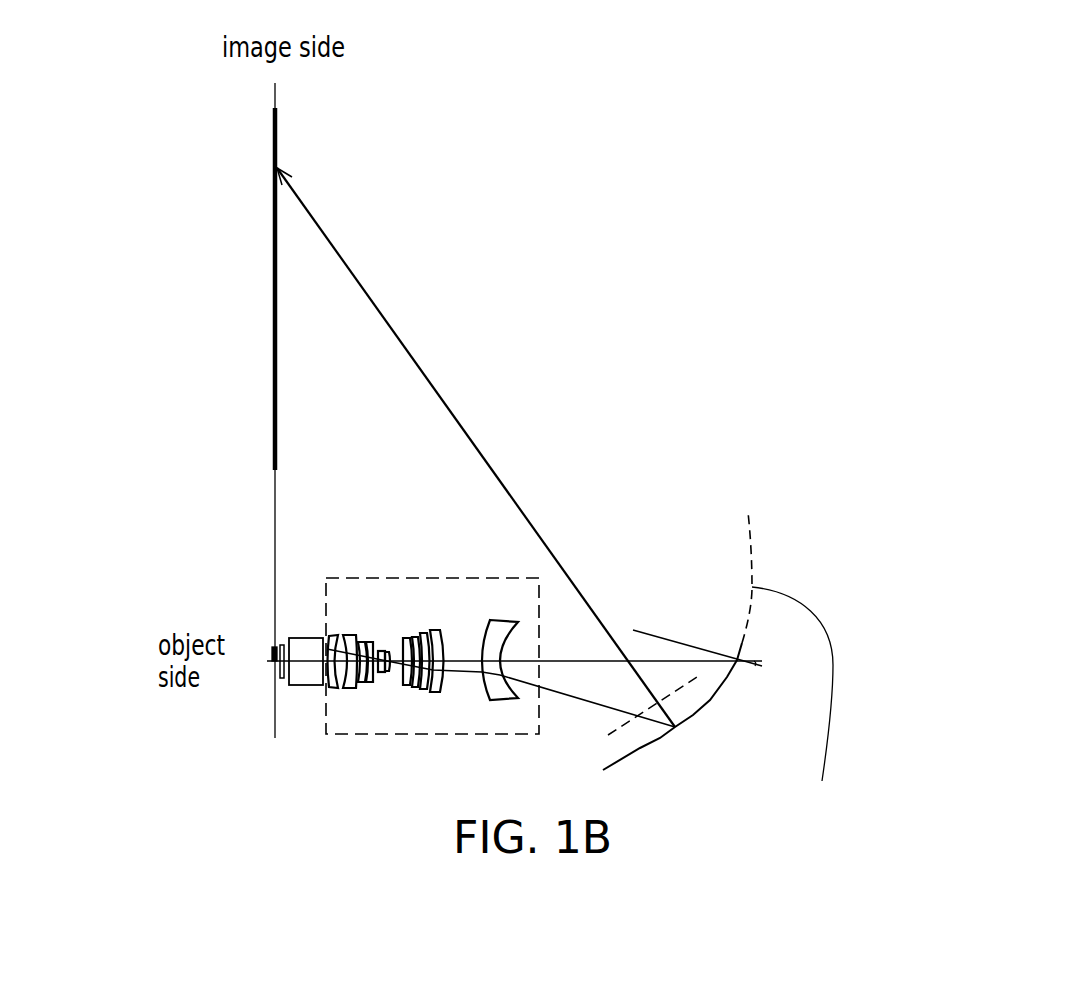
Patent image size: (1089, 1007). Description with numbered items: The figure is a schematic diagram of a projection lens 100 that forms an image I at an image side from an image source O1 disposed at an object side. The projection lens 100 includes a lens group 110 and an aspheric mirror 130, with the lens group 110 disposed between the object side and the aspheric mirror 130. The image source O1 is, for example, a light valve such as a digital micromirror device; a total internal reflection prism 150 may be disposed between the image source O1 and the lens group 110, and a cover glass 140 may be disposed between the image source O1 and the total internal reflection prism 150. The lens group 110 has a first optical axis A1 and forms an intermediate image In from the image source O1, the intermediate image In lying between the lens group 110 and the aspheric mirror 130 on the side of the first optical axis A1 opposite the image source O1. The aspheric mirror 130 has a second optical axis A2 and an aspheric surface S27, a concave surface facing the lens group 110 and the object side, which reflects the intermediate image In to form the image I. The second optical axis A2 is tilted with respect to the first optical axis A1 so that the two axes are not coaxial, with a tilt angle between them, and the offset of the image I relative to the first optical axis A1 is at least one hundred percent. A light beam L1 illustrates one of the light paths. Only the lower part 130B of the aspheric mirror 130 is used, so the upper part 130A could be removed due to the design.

The projection lens 100 is at (1017, 732).
The lens group 110 is at (434, 577).
The aspheric mirror 130 is at (725, 688).
The upper part of the aspheric mirror 130A is at (800, 700).
The lower part of the aspheric mirror 130B is at (705, 711).
The cover glass 140 is at (278, 677).
The total internal reflection prism 150 is at (308, 680).
The image I is at (273, 447).
The light beam L1 is at (467, 432).
The aspheric surface S27 is at (620, 764).
The image source O1 is at (275, 649).
The first optical axis A1 is at (251, 665).
The second optical axis A2 is at (753, 692).
The intermediate image In is at (642, 708).